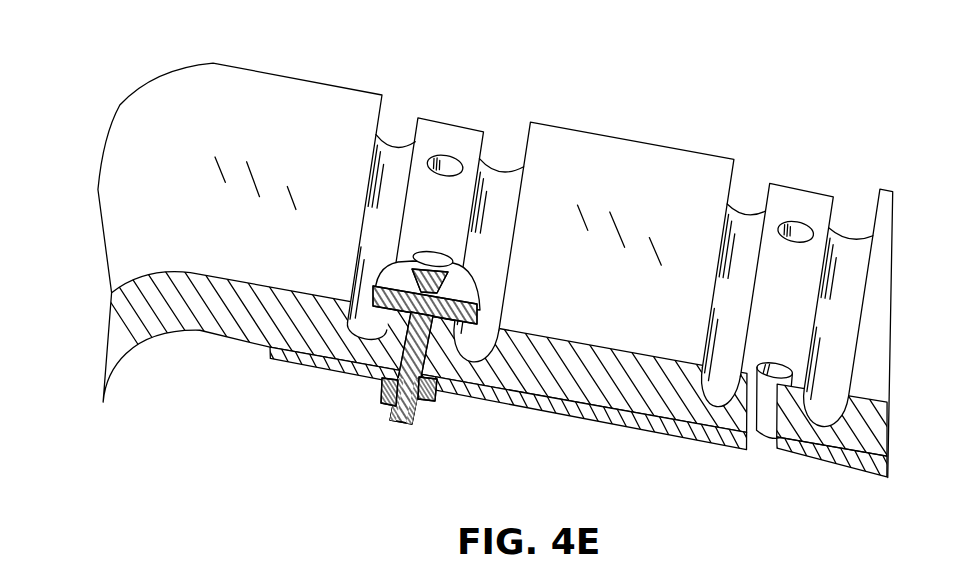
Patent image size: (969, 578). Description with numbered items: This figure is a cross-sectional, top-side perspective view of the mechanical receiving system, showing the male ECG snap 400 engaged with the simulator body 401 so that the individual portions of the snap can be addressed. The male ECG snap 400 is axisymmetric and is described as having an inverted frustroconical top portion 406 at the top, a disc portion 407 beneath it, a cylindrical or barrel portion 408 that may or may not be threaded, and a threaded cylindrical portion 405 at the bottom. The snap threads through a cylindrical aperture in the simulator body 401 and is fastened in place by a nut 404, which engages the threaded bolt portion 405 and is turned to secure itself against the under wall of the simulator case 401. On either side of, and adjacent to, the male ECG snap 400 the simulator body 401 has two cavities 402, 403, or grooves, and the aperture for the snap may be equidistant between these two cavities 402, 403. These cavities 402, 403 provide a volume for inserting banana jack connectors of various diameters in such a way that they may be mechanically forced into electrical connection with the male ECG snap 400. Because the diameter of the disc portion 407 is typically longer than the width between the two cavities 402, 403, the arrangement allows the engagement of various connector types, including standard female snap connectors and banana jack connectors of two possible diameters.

The male ECG snap 400 is at (416, 326).
The simulator body 401 is at (240, 82).
The cavity 402 is at (394, 100).
The cavity 403 is at (510, 128).
The nut 404 is at (377, 385).
The threaded cylindrical portion 405 is at (398, 440).
The inverted frustroconical top portion 406 is at (407, 257).
The disc portion 407 is at (473, 300).
The cylindrical or barrel portion 408 is at (465, 385).